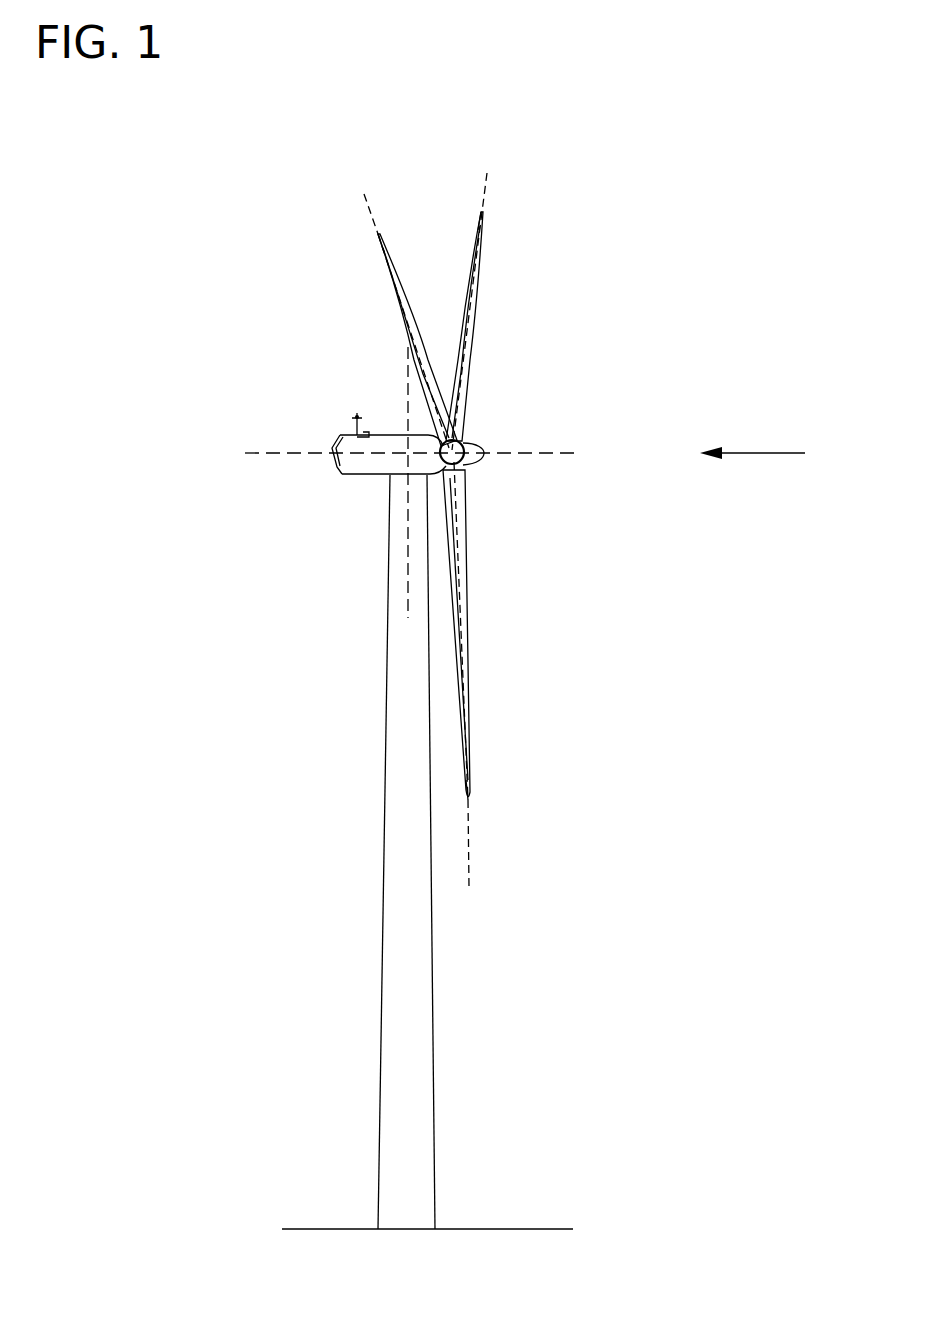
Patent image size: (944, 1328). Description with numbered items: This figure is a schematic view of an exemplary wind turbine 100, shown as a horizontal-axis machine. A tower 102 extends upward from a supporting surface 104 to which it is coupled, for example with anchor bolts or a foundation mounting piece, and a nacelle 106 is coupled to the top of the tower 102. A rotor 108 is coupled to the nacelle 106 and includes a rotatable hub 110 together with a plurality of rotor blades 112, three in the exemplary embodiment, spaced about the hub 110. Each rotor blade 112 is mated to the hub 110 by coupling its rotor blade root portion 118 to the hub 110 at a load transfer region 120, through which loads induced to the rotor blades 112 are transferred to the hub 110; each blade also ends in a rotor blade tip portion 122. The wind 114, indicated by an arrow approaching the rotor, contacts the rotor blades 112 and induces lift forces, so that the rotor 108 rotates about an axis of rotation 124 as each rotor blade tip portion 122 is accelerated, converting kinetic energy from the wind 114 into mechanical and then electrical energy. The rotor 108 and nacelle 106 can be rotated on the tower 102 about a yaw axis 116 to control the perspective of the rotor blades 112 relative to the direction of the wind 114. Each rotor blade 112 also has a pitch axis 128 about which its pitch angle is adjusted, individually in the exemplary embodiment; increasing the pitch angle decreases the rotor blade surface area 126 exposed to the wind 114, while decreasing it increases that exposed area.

The wind turbine 100 is at (168, 242).
The tower 102 is at (382, 1003).
The supporting surface 104 is at (337, 1229).
The nacelle 106 is at (360, 477).
The rotor 108 is at (498, 350).
The rotatable hub 110 is at (466, 450).
The rotor blades 112 is at (407, 333).
The wind 114 is at (773, 453).
The yaw axis 116 is at (406, 383).
The rotor blade root portion 118 is at (462, 528).
The load transfer regions 120 is at (467, 440).
The rotor blade tip portion 122 is at (381, 252).
The axis of rotation 124 is at (536, 455).
The rotor blade surface area 126 is at (469, 396).
The pitch axis 128 is at (364, 197).